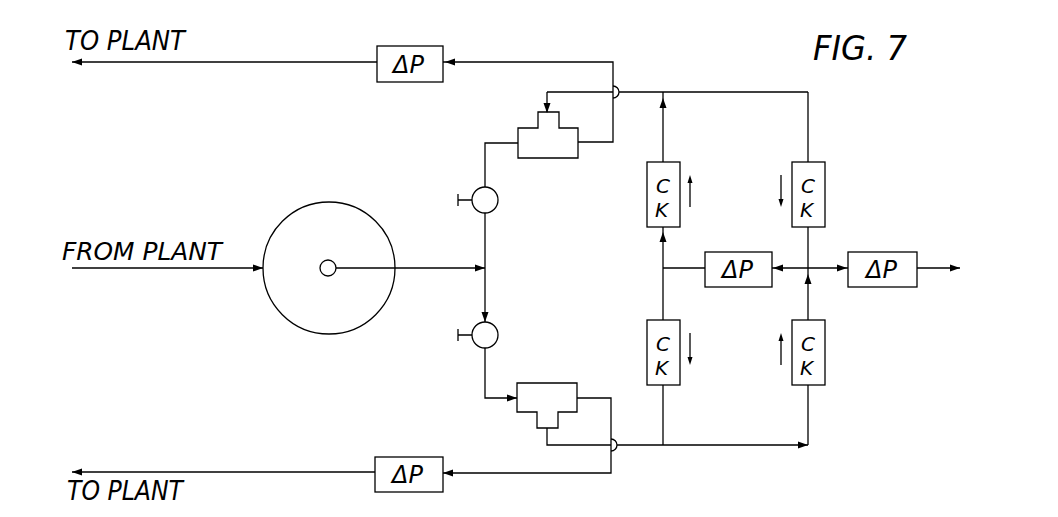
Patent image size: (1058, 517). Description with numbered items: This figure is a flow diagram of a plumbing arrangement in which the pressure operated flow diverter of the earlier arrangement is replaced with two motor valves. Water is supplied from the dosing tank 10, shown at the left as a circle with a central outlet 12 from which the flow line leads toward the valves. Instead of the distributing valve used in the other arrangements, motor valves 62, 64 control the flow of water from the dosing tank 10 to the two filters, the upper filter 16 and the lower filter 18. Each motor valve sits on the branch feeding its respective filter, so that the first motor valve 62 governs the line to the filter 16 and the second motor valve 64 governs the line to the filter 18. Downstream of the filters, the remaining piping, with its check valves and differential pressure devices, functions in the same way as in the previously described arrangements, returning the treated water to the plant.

The dosing tank 10 is at (360, 325).
The central outlet port 12 is at (324, 276).
The filter 16 is at (565, 158).
The filter 18 is at (560, 383).
The motor valve 62 is at (498, 200).
The motor valve 64 is at (494, 324).